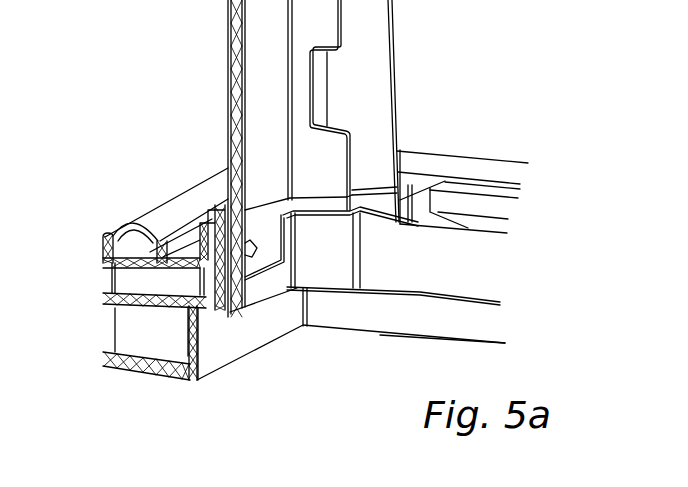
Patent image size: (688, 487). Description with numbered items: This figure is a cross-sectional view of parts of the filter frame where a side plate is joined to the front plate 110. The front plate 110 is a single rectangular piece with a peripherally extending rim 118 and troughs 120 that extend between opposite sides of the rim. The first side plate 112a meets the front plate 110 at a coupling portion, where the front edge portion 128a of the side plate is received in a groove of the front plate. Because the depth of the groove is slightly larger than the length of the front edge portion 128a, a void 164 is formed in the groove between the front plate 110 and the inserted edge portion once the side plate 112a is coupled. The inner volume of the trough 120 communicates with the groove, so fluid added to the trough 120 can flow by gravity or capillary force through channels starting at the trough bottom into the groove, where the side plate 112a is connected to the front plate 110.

The first side plate 112a is at (227, 48).
The rim 118 is at (103, 258).
The front edge portion of the first side plate 128a is at (226, 273).
The void 164 is at (223, 313).
The trough 120 is at (417, 292).
The front plate 110 is at (250, 355).